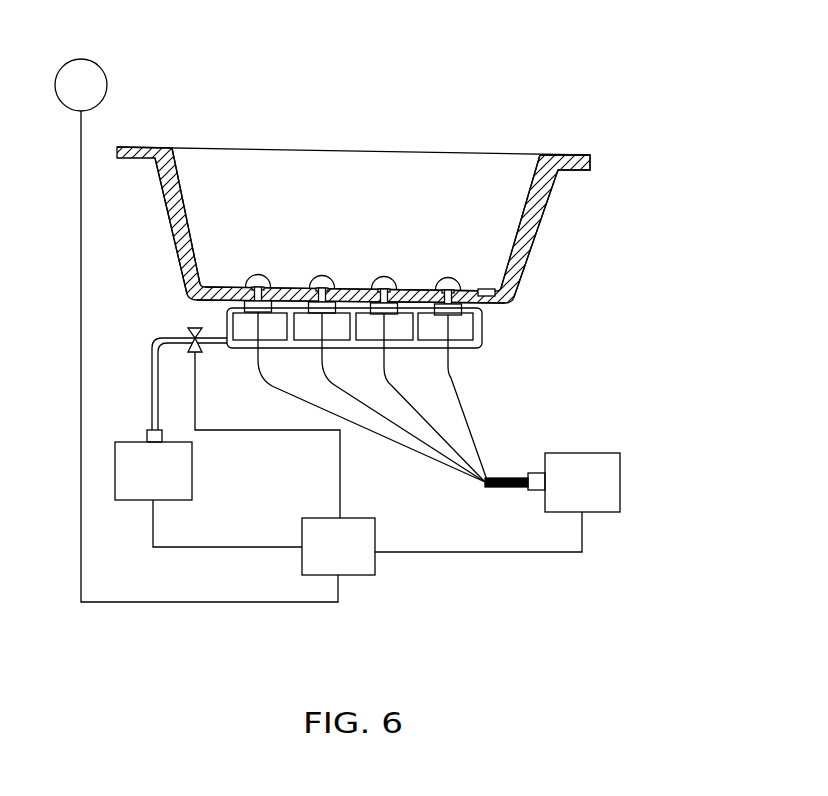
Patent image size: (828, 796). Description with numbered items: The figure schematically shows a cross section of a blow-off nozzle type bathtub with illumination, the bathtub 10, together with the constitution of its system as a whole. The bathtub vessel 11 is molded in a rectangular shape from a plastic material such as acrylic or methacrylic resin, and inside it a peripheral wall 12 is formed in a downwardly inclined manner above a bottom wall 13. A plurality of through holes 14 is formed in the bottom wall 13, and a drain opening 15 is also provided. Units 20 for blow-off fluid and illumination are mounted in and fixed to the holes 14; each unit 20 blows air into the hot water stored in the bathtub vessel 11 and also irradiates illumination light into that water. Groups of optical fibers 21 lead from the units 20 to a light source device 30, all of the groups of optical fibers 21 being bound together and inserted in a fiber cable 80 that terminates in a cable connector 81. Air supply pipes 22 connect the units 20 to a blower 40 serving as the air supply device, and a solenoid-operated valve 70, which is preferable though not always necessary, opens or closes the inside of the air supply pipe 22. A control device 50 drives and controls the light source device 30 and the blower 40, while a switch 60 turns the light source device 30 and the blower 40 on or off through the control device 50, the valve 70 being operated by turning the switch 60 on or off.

The bathtub 10 is at (395, 196).
The bathtub vessel 11 is at (558, 153).
The peripheral wall 12 is at (180, 188).
The bottom wall 13 is at (418, 288).
The through holes 14 is at (247, 283).
The drain opening 15 is at (486, 289).
The unit for blow-off fluid and illumination 20 is at (325, 283).
The groups of optical fibers 21 is at (447, 333).
The air supply pipes 22 is at (227, 320).
The light source device 30 is at (578, 453).
The blower 40 is at (178, 476).
The control device 50 is at (352, 566).
The switch 60 is at (107, 84).
The solenoid-operated valve 70 is at (197, 355).
The fiber cable 80 is at (500, 477).
The cable connector 81 is at (533, 489).